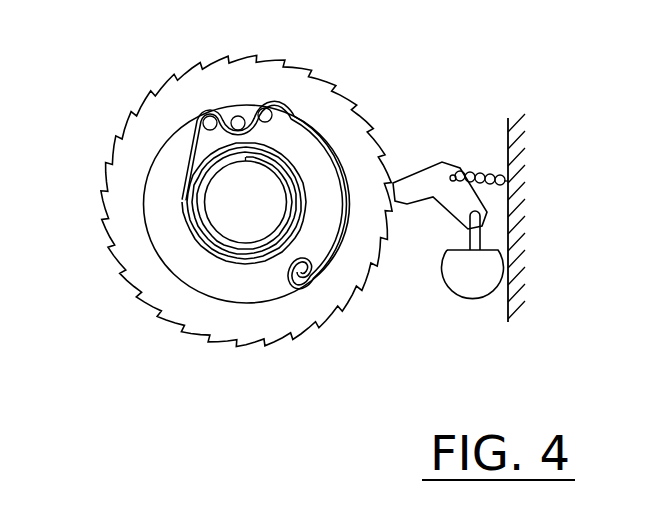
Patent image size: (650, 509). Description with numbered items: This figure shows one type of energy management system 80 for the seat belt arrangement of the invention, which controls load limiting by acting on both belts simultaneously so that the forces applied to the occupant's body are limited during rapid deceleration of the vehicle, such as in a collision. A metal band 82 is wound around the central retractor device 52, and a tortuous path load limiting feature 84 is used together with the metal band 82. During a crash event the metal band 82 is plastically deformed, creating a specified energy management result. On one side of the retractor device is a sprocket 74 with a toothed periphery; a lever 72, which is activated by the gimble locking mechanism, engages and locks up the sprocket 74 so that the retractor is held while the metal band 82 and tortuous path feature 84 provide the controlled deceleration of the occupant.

The central retractor device 52 is at (150, 208).
The lever 72 is at (421, 180).
The sprocket 74 is at (316, 83).
The energy management system 80 is at (207, 376).
The metal band 82 is at (329, 137).
The tortuous path load limiting feature 84 is at (240, 117).